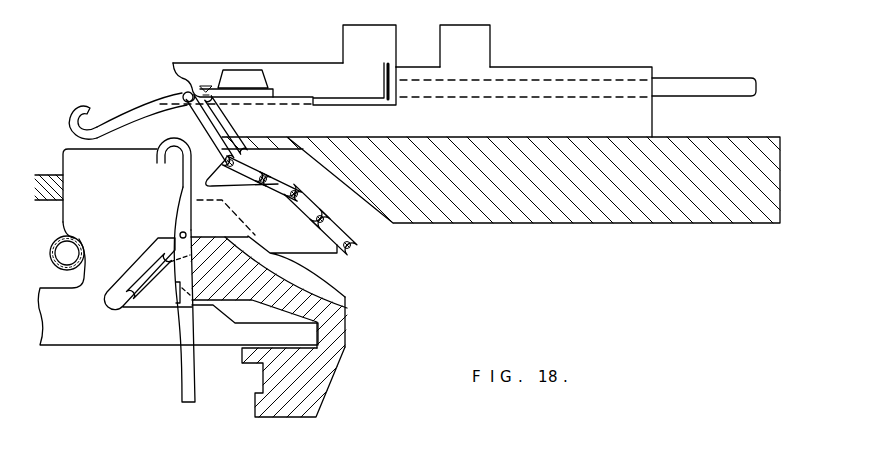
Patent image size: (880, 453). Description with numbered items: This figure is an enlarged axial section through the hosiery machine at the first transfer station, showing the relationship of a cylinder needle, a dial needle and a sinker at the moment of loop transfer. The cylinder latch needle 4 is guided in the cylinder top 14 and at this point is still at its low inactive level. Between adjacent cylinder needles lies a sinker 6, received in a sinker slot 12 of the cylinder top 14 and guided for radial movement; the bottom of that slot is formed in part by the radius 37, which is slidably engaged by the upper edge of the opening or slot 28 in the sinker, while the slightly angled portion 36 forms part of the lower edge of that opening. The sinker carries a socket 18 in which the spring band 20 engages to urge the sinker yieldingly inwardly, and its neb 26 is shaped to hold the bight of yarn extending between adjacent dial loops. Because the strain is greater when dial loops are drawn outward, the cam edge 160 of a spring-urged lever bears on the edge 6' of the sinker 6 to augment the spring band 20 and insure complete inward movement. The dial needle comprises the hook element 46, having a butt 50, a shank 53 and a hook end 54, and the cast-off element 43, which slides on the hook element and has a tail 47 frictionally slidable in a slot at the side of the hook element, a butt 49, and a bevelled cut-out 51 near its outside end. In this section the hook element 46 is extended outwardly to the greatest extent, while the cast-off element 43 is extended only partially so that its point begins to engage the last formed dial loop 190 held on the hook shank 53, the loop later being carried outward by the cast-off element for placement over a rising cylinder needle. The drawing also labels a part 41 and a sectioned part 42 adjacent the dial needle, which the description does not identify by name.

The latch needle 4 is at (183, 377).
The sinker 6 is at (162, 179).
The edge of sinker 6' is at (100, 172).
The sinker slot 12 is at (323, 292).
The cylinder top 14 is at (331, 370).
The socket 18 is at (67, 235).
The spring band 20 is at (53, 243).
The neb 26 is at (244, 153).
The opening or slot 28 is at (108, 299).
The slightly angled portion 36 is at (268, 322).
The radius 37 is at (290, 270).
The link chain 41 is at (260, 142).
The hatched block 42 is at (477, 221).
The cast-off element 43 is at (297, 77).
The hook element 46 is at (438, 122).
The tail 47 is at (686, 85).
The butt 49 is at (352, 33).
The butt 50 is at (486, 45).
The bevelled cut-out 51 is at (247, 78).
The shank 53 is at (165, 110).
The hook end 54 is at (90, 110).
The cam edge 160 is at (47, 174).
The loop 190 is at (196, 121).